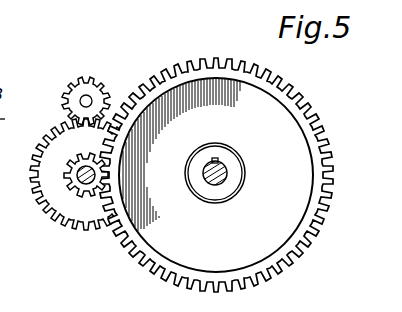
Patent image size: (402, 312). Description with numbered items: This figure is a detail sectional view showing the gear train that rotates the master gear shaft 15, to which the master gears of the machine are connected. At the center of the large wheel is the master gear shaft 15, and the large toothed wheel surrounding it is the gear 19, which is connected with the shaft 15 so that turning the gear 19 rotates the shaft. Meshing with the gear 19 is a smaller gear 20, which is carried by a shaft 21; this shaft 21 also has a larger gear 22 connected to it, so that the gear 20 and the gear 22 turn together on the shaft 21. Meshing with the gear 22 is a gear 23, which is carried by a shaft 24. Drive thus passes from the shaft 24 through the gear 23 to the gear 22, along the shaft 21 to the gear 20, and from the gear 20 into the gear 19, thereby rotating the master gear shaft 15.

The master gear shaft 15 is at (229, 181).
The gear 19 is at (218, 60).
The gear 20 is at (72, 195).
The shaft 21 is at (66, 178).
The gear 22 is at (43, 137).
The gear 23 is at (101, 86).
The shaft 24 is at (79, 99).